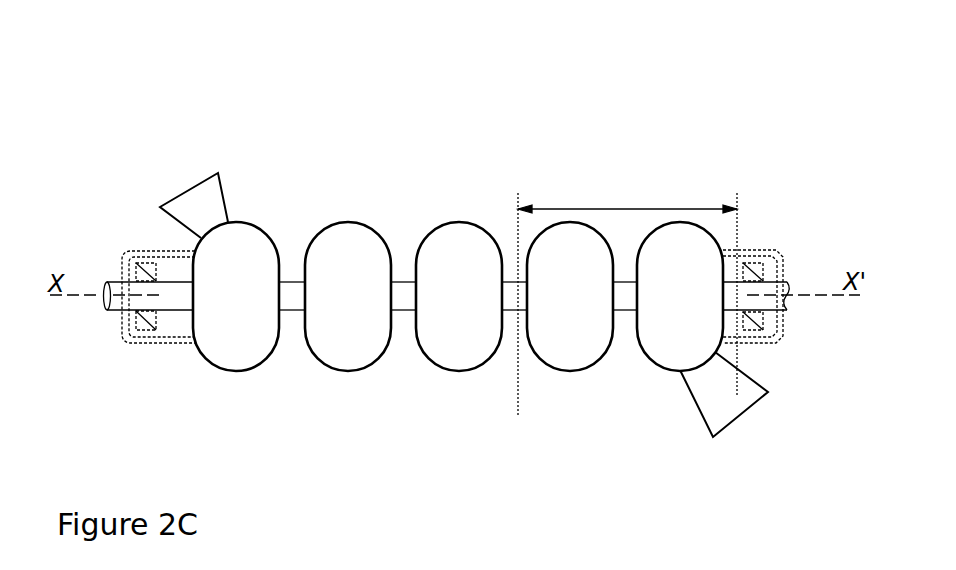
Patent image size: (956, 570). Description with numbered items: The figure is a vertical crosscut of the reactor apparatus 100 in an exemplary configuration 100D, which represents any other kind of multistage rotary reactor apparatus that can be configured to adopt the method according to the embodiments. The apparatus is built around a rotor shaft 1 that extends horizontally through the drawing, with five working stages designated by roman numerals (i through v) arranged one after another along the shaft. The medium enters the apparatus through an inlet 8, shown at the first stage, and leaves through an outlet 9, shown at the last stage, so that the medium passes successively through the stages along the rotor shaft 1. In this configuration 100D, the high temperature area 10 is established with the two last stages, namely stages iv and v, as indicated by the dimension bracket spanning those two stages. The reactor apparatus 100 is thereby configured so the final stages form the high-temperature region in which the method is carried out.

The rotor shaft 1 is at (107, 310).
The inlet 8 is at (187, 200).
The outlet 9 is at (724, 401).
The high temperature area 10 is at (627, 292).
The reactor apparatus 100 is at (797, 43).
The reactor apparatus 100D is at (471, 231).